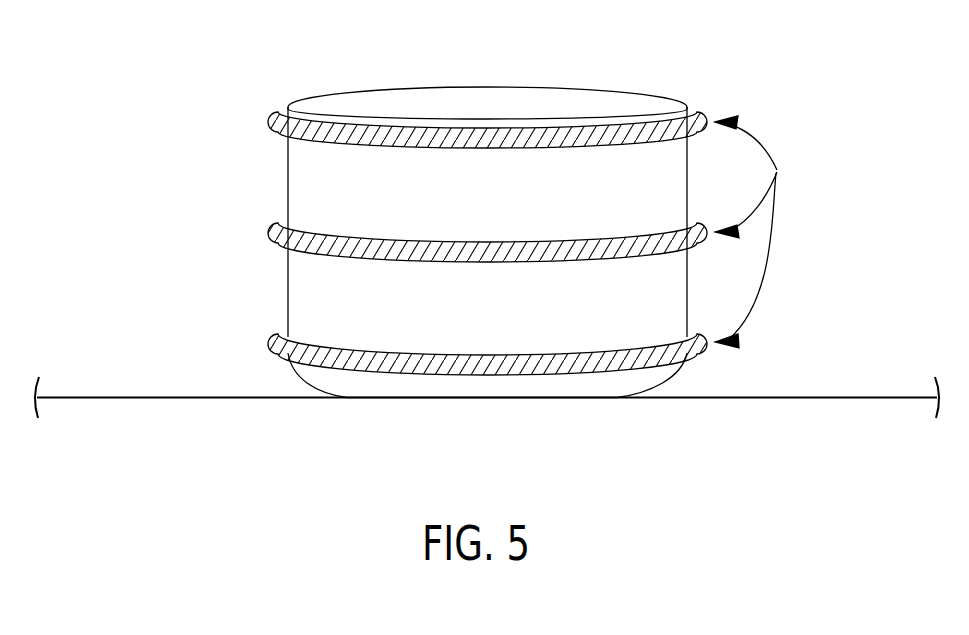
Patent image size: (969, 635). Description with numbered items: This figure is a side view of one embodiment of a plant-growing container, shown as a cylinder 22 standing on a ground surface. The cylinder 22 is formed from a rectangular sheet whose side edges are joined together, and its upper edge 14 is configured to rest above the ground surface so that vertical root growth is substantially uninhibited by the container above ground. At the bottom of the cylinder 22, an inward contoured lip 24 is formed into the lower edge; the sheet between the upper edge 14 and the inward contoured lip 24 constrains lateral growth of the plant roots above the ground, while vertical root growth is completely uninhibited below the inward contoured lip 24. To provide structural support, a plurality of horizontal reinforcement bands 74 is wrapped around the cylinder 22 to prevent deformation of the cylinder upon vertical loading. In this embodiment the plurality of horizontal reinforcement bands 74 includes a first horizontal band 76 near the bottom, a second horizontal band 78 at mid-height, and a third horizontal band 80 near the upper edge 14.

The upper edge 14 is at (603, 93).
The cylinder 22 is at (677, 190).
The inward contoured lip 24 is at (668, 369).
The plurality of horizontal reinforcement bands 74 is at (777, 171).
The first horizontal band 76 is at (272, 341).
The second horizontal band 78 is at (272, 230).
The third horizontal band 80 is at (272, 118).